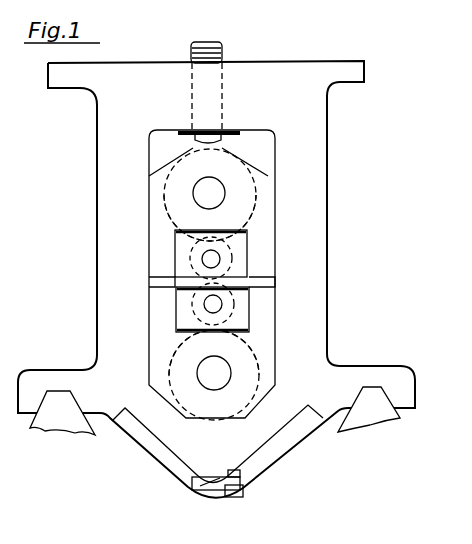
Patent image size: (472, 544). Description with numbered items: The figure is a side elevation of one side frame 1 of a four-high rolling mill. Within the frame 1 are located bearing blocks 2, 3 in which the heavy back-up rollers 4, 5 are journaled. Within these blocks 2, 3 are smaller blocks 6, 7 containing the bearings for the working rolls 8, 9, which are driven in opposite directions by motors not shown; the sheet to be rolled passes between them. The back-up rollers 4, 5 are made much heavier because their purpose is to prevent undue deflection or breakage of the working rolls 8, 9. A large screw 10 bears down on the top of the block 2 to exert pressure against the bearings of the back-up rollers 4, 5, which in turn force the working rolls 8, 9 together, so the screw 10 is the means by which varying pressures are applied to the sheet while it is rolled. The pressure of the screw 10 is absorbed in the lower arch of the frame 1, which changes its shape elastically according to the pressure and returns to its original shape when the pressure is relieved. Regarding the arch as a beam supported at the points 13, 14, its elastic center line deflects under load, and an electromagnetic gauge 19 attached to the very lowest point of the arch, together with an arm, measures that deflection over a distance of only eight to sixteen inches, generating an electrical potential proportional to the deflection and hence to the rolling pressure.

The side frame 1 is at (323, 122).
The bearing block 2 is at (262, 214).
The bearing block 3 is at (270, 368).
The back-up roller 4 is at (253, 228).
The back-up roller 5 is at (258, 352).
The smaller block 6 is at (183, 241).
The smaller block 7 is at (185, 316).
The working roll 8 is at (200, 258).
The working roll 9 is at (200, 305).
The large screw 10 is at (190, 46).
The support point 13 is at (378, 381).
The support point 14 is at (58, 391).
The electromagnetic gauge 19 is at (218, 492).